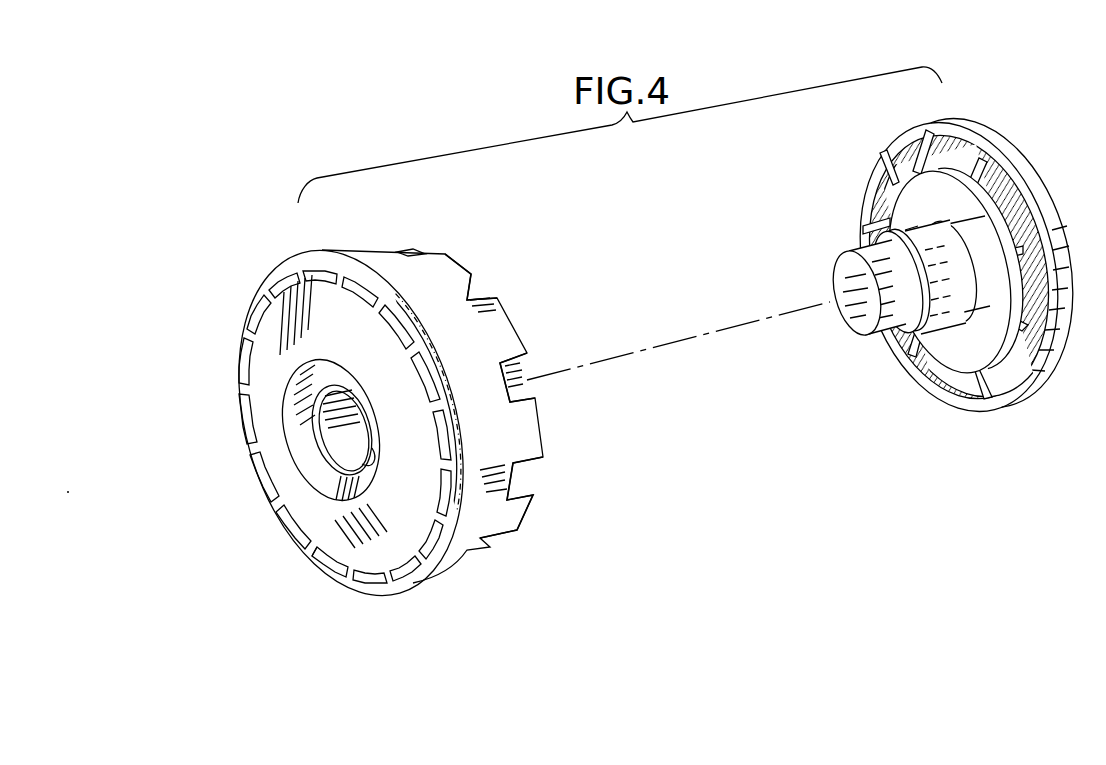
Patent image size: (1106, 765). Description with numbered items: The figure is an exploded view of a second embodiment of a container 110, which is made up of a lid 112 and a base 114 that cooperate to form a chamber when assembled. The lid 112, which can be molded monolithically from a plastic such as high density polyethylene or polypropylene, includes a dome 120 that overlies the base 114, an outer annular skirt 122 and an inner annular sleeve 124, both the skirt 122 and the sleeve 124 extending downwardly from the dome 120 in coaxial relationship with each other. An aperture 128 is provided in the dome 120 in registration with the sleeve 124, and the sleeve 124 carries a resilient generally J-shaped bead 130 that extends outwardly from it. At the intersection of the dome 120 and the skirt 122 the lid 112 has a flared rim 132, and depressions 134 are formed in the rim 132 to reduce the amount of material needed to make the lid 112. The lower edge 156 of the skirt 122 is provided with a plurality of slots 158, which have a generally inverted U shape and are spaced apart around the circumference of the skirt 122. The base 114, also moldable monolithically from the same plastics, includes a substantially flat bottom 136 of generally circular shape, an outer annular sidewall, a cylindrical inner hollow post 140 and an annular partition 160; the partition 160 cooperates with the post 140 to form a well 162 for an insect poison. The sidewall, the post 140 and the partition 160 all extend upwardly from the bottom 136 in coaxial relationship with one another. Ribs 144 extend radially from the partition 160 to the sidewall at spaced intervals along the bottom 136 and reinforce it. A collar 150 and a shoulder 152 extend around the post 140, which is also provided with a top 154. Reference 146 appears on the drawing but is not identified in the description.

The container 110 is at (738, 416).
The lid 112 is at (288, 248).
The base 114 is at (1062, 264).
The dome 120 is at (275, 450).
The outer annular skirt 122 is at (469, 550).
The inner annular sleeve 124 is at (342, 410).
The aperture 128 is at (302, 404).
The resilient generally J-shaped bead 130 is at (370, 481).
The flared rim 132 is at (360, 592).
The depressions 134 is at (348, 283).
The bottom 136 is at (948, 212).
The inner hollow post 140 is at (900, 300).
The ribs 144 is at (1022, 235).
The rotor rim 146 is at (973, 262).
The collar 150 is at (985, 298).
The shoulder 152 is at (918, 335).
The top 154 is at (853, 320).
The lower edge 156 is at (532, 500).
The slots 158 is at (470, 288).
The annular partition 160 is at (897, 205).
The well 162 is at (962, 215).